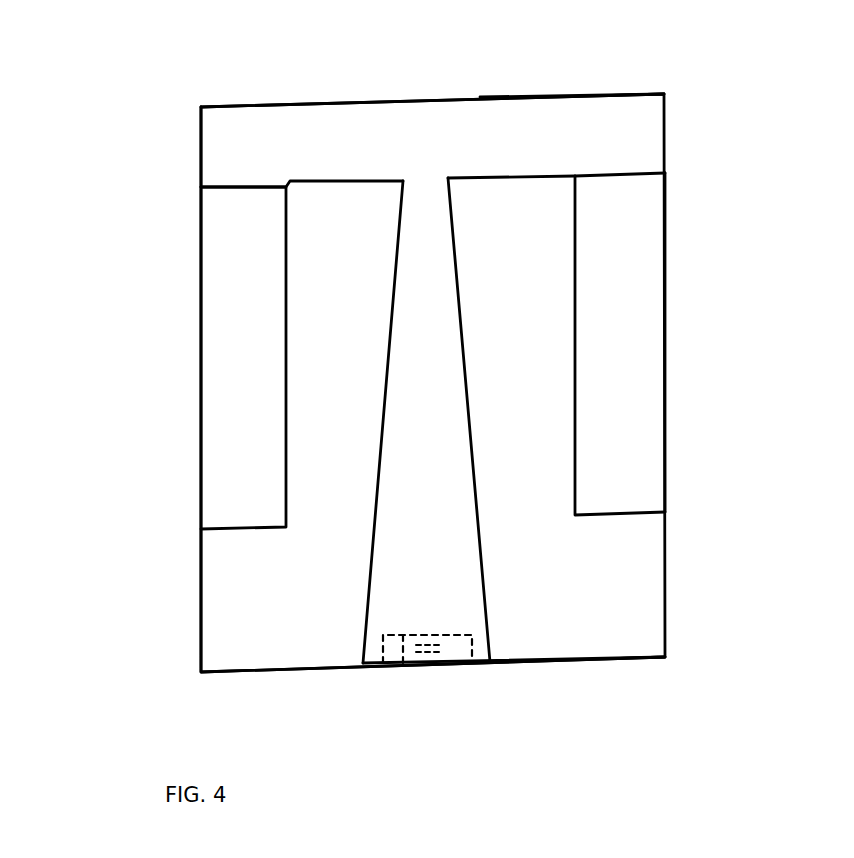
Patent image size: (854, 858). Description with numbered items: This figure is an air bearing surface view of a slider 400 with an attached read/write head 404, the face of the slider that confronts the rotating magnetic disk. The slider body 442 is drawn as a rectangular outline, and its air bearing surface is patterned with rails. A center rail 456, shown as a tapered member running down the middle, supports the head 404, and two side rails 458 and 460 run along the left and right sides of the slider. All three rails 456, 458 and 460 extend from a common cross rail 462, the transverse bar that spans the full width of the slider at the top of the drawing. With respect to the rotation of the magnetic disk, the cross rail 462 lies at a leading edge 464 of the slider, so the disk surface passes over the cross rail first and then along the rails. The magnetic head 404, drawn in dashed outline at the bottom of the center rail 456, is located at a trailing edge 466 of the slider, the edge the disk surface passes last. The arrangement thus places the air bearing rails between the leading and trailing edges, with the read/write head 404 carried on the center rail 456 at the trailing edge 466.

The slider 400 is at (147, 93).
The read/write head 404 is at (405, 670).
The mold body 442 is at (196, 622).
The center rail 456 is at (410, 292).
The side rail 458 is at (216, 263).
The side rail 460 is at (648, 255).
The cross rail 462 is at (342, 112).
The leading edge 464 is at (537, 97).
The trailing edge 466 is at (561, 660).